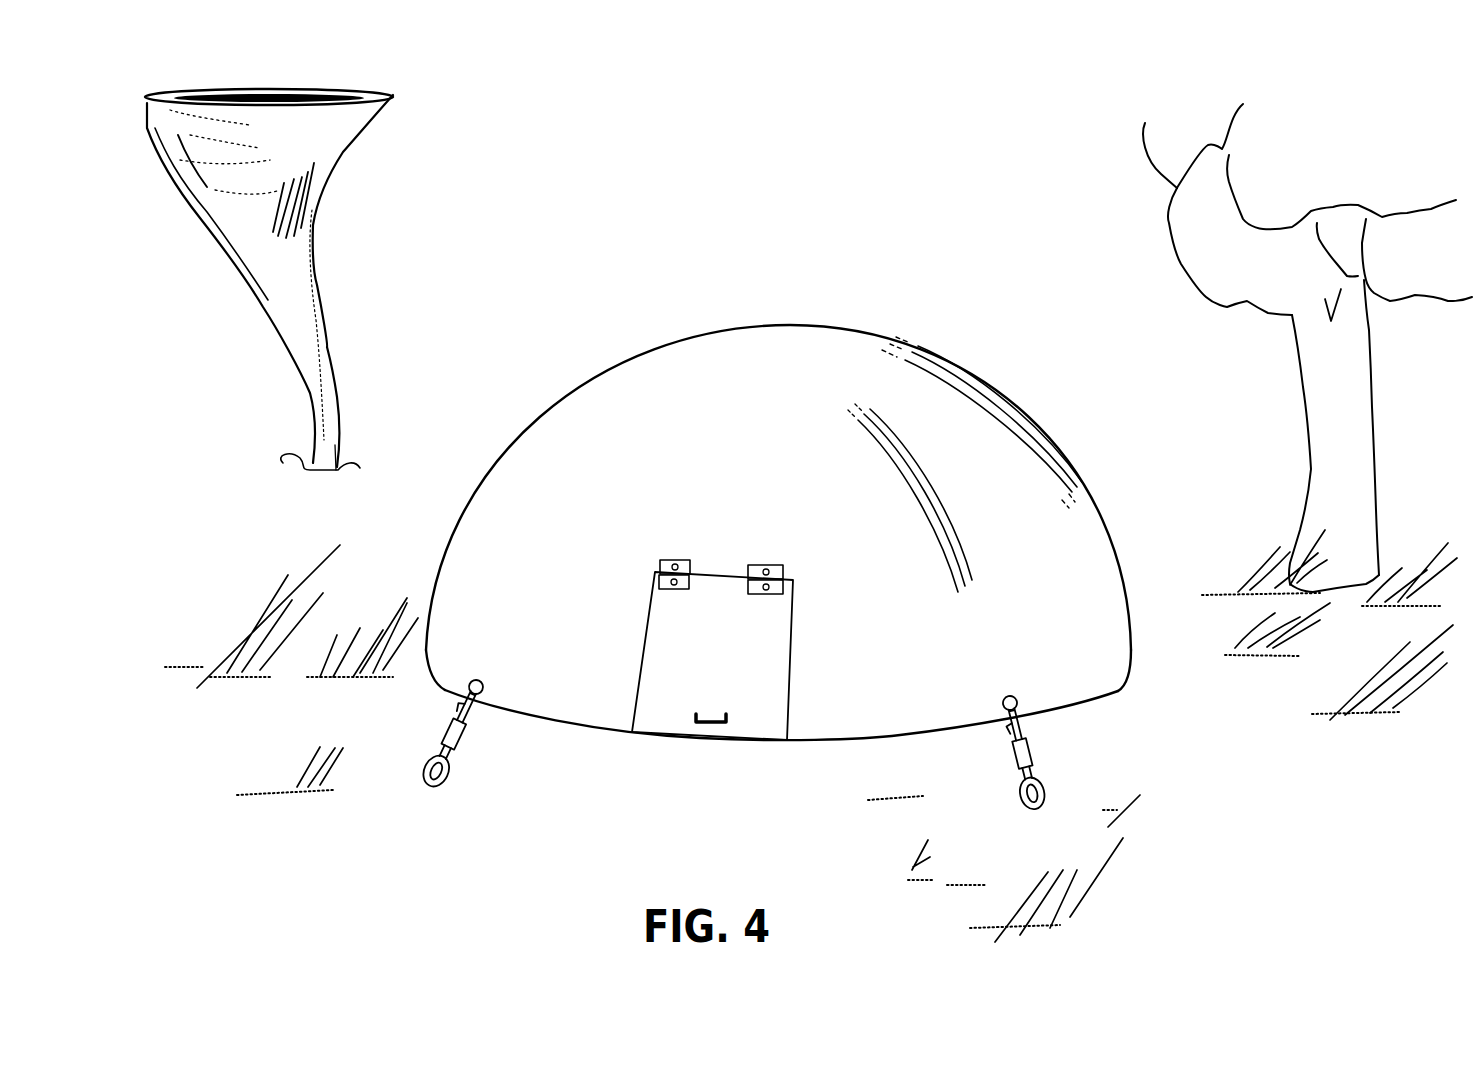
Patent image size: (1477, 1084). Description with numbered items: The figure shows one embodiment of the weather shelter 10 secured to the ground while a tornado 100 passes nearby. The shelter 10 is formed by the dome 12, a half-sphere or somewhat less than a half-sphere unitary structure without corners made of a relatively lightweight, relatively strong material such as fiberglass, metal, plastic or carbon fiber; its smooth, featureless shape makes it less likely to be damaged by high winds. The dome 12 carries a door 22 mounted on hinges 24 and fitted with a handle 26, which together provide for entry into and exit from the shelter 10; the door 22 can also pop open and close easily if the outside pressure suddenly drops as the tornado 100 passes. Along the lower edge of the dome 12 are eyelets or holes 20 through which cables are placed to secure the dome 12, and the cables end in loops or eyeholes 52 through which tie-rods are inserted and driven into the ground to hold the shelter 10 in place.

The shelter 10 is at (734, 555).
The dome 12 is at (652, 378).
The eyelets or holes 20 is at (470, 690).
The door 22 is at (764, 644).
The hinges 24 is at (748, 567).
The handle 26 is at (713, 718).
The loops or eyeholes 52 is at (452, 773).
The tornado 100 is at (310, 193).